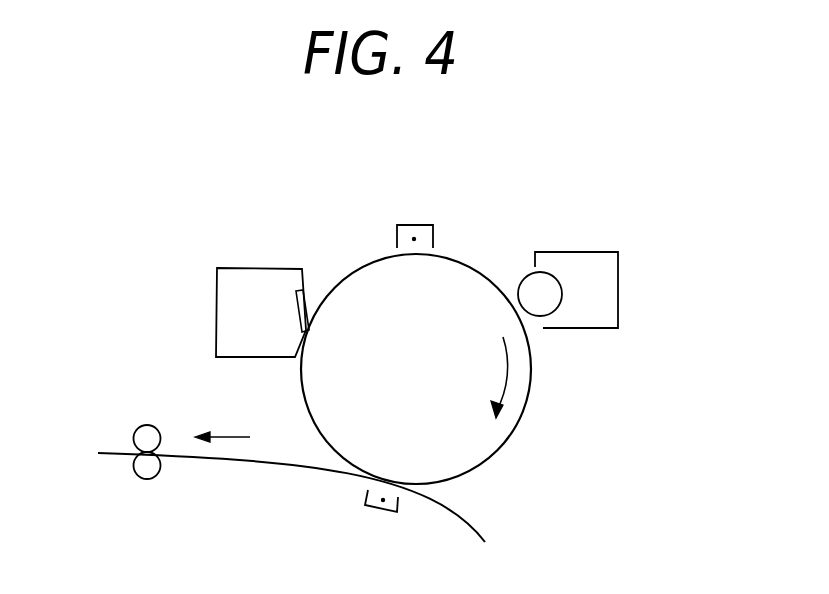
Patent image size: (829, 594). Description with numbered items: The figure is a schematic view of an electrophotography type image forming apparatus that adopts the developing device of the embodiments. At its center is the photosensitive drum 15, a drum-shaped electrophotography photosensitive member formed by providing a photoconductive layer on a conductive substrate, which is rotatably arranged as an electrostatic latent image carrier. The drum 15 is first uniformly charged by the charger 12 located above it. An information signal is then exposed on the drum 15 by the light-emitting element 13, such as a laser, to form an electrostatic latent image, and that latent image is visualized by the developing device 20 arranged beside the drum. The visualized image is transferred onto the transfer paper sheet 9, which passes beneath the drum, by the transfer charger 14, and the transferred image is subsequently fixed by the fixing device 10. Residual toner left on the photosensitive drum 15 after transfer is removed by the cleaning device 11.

The transfer paper sheet 9 is at (285, 463).
The fixing device 10 is at (150, 479).
The cleaning device 11 is at (268, 268).
The charger 12 is at (422, 224).
The light-emitting element 13 is at (480, 254).
The transfer charger 14 is at (380, 515).
The photosensitive drum 15 is at (317, 313).
The developing device 20 is at (580, 252).